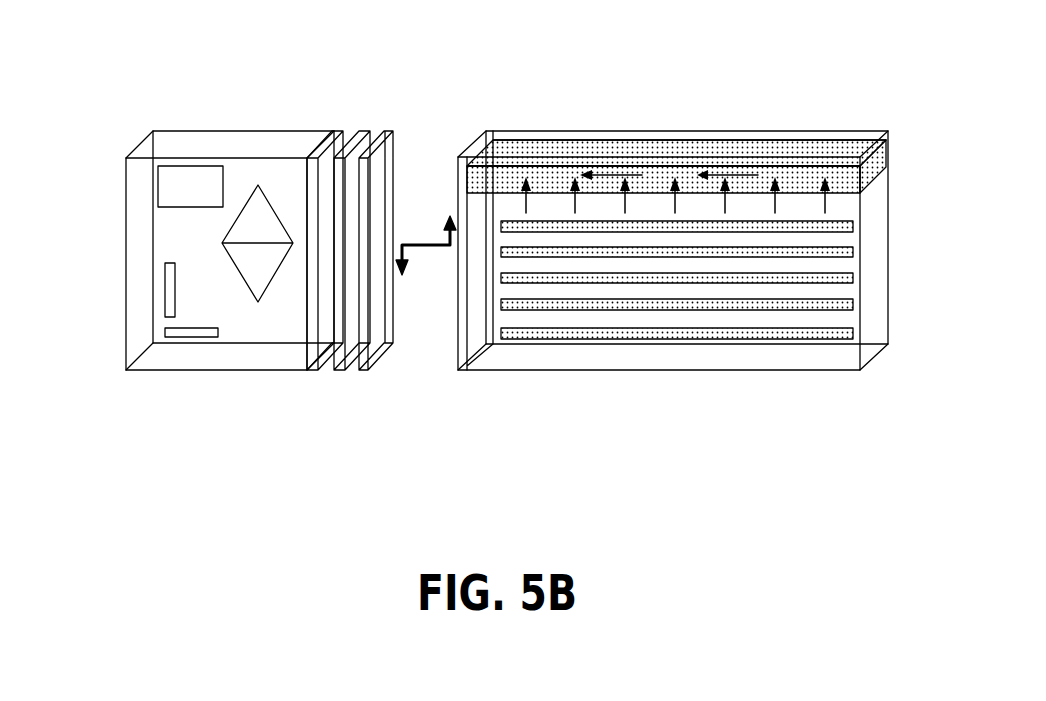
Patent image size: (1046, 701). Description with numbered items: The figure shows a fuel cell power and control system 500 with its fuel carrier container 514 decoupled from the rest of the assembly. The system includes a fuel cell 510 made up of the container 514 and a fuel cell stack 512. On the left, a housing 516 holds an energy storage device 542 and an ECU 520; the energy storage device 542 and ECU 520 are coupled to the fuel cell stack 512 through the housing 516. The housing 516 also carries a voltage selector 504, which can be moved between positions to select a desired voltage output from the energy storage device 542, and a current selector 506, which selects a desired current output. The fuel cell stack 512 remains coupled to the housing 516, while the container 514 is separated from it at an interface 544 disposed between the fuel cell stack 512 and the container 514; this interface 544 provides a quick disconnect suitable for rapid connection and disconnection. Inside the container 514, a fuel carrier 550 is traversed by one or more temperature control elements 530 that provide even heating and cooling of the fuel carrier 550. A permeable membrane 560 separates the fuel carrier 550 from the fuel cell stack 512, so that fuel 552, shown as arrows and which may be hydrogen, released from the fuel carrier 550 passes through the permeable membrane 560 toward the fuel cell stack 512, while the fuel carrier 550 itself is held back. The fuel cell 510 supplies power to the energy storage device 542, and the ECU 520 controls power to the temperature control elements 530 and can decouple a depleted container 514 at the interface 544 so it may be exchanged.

The fuel cell power and control system 500 is at (98, 98).
The voltage selector 504 is at (172, 285).
The current selector 506 is at (193, 335).
The fuel cell 510 is at (860, 425).
The fuel cell stack 512 is at (317, 378).
The fuel carrier container 514 is at (756, 132).
The housing 516 is at (272, 131).
The ECU 520 is at (192, 166).
The temperature control elements 530 is at (853, 306).
The energy storage device 542 is at (243, 268).
The interface 544 is at (477, 141).
The fuel carrier 550 is at (788, 315).
The fuel 552 is at (600, 175).
The permeable membrane 560 is at (677, 150).